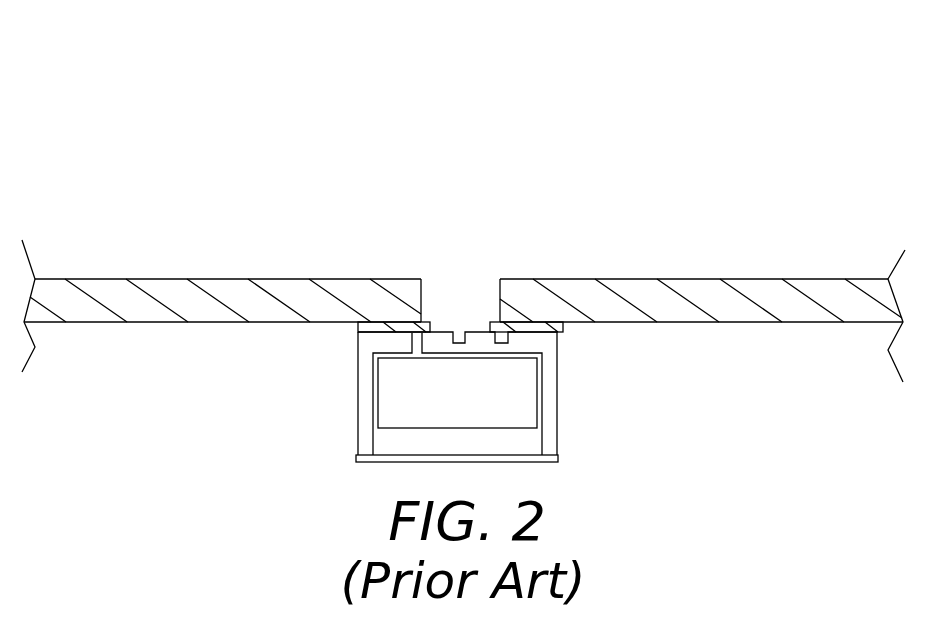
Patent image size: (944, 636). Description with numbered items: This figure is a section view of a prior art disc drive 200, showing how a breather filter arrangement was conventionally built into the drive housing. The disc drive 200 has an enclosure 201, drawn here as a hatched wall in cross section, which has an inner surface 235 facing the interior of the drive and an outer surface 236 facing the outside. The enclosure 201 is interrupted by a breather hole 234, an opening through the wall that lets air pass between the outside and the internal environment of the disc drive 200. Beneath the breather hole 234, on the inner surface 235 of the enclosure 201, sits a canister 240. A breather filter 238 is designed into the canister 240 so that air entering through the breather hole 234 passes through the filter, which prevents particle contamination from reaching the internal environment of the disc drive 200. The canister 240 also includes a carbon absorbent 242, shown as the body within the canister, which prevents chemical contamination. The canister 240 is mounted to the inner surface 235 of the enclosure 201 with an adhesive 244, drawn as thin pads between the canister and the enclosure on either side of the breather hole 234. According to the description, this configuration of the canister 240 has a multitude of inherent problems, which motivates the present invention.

The disc drive 200 is at (621, 124).
The enclosure 201 is at (274, 264).
The breather hole 234 is at (455, 300).
The inner surface 235 is at (704, 323).
The outer surface 236 is at (693, 279).
The breather filter 238 is at (515, 462).
The canister 240 is at (358, 397).
The carbon absorbent 242 is at (393, 408).
The adhesive 244 is at (355, 330).